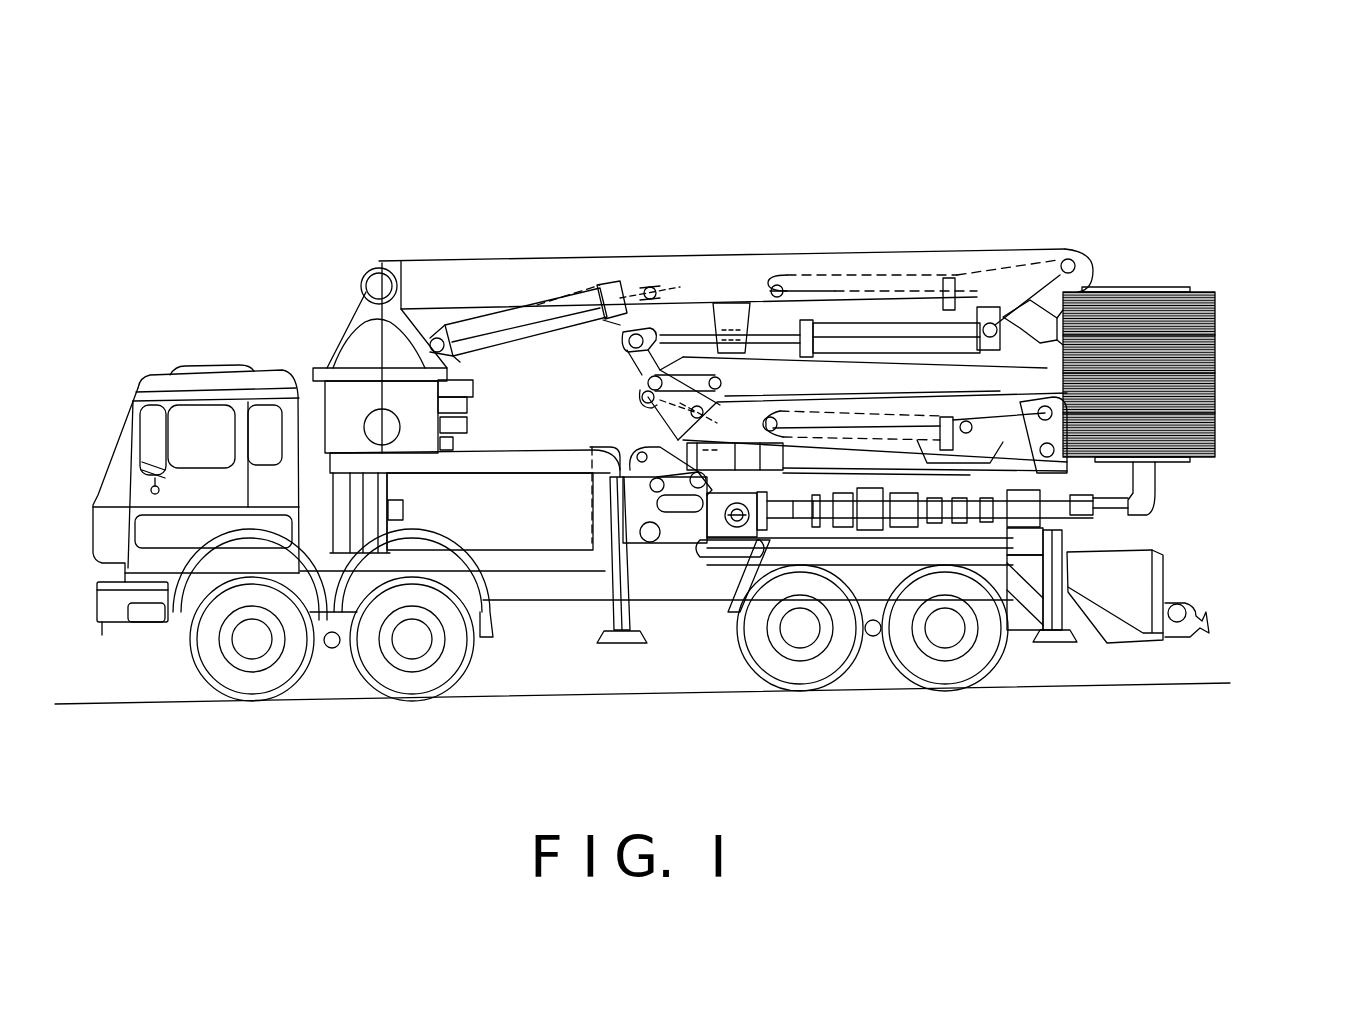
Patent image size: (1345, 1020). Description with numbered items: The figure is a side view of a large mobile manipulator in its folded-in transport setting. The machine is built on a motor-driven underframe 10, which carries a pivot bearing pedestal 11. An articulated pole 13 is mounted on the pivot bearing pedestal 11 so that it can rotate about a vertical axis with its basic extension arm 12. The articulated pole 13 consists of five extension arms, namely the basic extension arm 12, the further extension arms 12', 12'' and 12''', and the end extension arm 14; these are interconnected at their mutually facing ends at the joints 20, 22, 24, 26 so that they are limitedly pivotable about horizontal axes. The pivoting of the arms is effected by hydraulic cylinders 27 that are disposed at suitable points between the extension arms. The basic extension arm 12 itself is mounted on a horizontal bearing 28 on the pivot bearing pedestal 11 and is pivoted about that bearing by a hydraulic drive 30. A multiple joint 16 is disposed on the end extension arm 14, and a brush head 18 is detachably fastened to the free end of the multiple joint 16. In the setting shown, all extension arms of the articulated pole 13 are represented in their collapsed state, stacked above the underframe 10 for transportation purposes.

The motor-driven underframe 10 is at (595, 592).
The pivot bearing pedestal 11 is at (352, 352).
The basic extension arm 12 is at (913, 227).
The extension arm 12' is at (880, 316).
The extension arm 12'' is at (1140, 272).
The extension arm 12''' is at (1203, 488).
The articulated pole 13 is at (952, 265).
The end extension arm 14 is at (707, 545).
The multiple joint 16 is at (878, 500).
The brush head 18 is at (1205, 358).
The joint 20 is at (1068, 258).
The joint 22 is at (645, 378).
The joint 24 is at (1063, 520).
The joint 26 is at (650, 548).
The hydraulic cylinders 27 is at (883, 327).
The horizontal bearing 28 is at (369, 273).
The hydraulic drive 30 is at (503, 315).